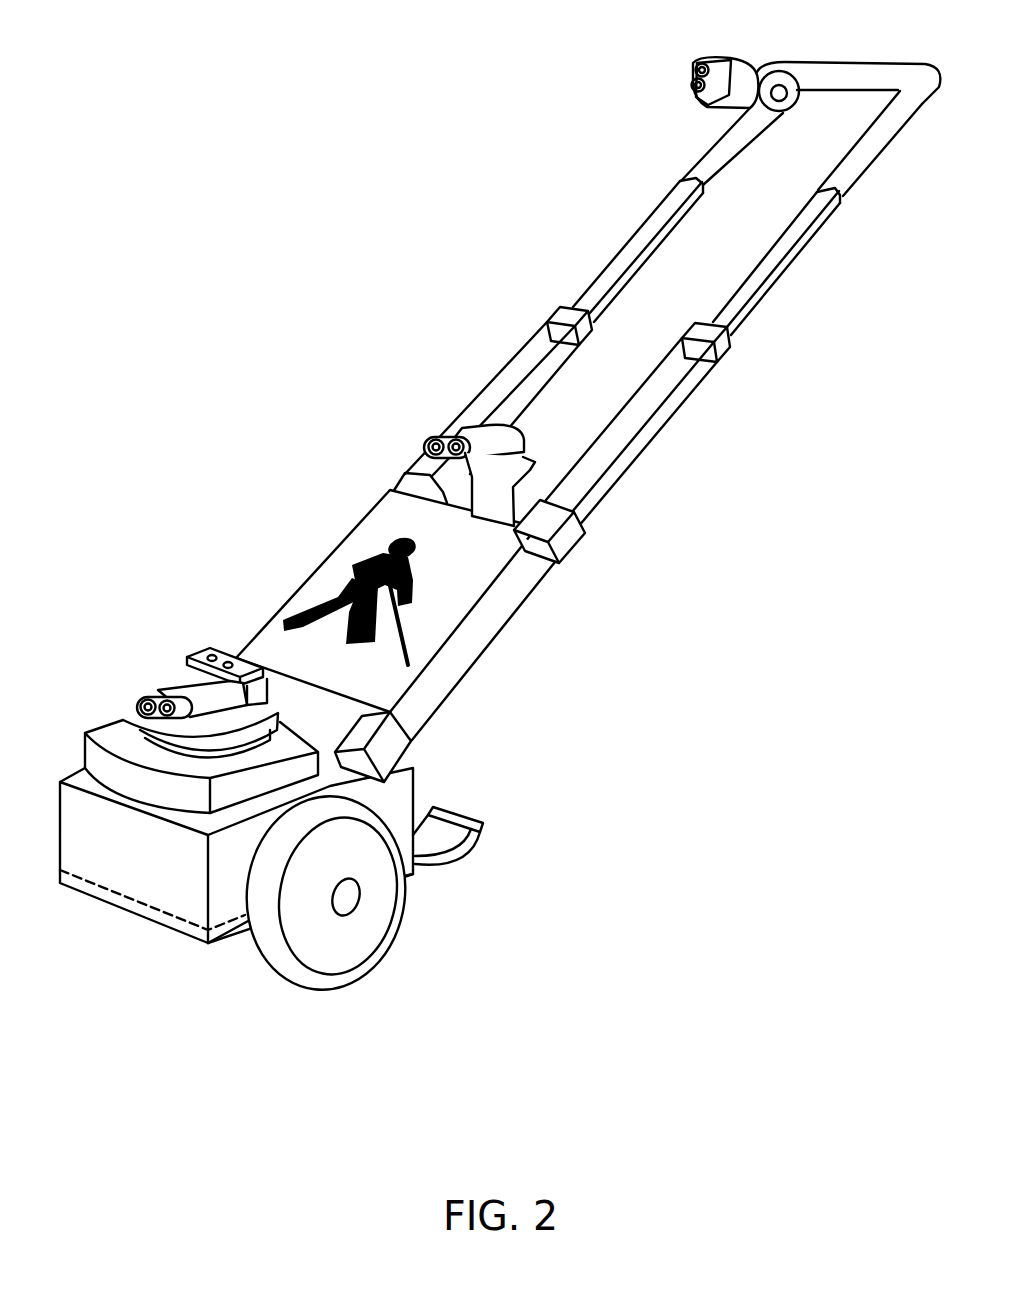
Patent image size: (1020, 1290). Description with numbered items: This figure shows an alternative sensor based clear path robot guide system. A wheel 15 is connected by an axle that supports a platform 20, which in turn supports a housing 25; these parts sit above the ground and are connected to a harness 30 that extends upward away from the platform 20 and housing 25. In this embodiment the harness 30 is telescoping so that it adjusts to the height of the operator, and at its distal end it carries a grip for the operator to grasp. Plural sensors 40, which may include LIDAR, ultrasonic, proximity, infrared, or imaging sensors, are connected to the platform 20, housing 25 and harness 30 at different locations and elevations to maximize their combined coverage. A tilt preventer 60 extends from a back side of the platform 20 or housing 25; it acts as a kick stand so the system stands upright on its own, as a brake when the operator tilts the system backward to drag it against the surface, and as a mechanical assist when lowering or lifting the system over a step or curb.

The wheel 15 is at (400, 923).
The platform 20 is at (150, 907).
The housing 25 is at (400, 801).
The harness 30 is at (777, 283).
The sensors 40 is at (681, 77).
The tilt preventer 60 is at (467, 850).